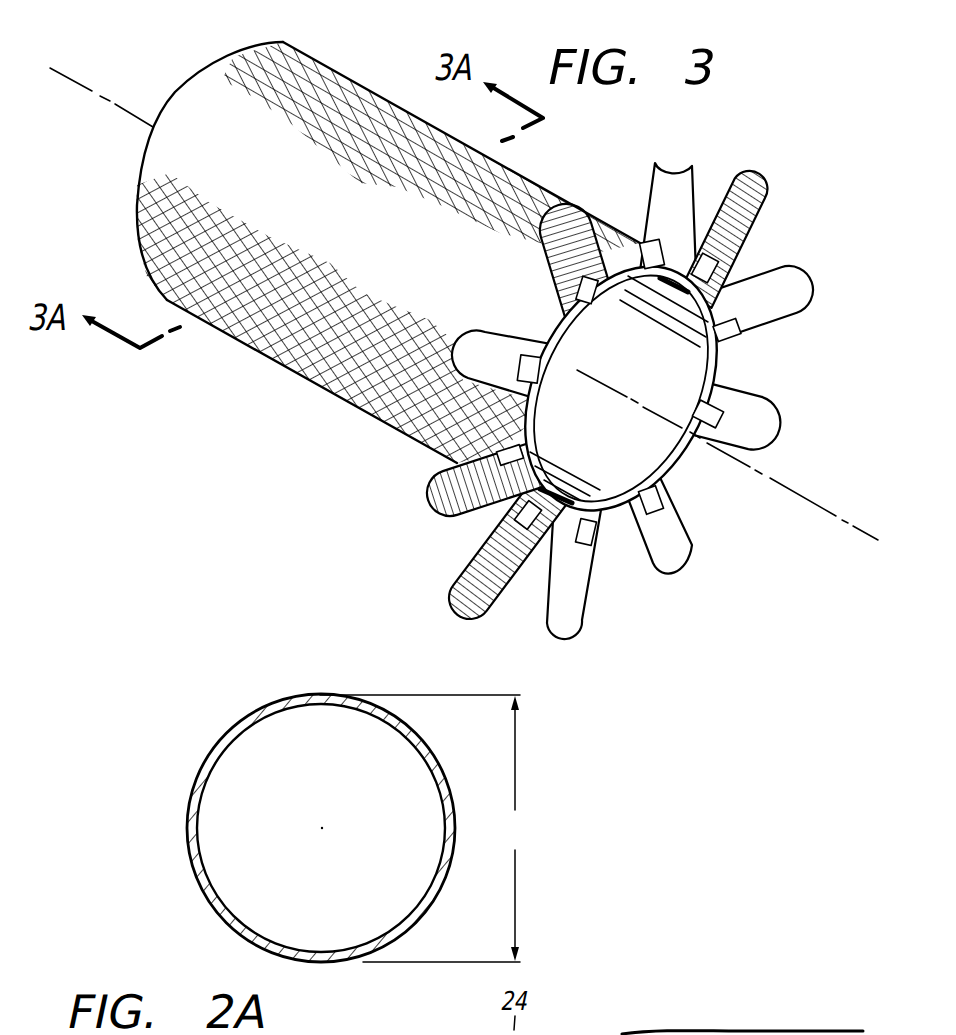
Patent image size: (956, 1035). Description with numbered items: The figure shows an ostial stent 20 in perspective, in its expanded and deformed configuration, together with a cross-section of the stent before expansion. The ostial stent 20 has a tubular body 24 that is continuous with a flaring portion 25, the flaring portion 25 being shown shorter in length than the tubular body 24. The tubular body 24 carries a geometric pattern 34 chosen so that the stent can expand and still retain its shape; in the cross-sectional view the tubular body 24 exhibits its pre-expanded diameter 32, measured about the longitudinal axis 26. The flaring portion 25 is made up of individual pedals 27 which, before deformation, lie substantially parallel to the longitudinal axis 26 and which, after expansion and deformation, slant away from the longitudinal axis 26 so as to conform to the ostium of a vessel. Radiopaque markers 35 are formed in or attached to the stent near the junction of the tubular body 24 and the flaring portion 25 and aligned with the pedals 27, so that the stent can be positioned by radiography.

In FIG. 3, the ostial stent 20 is at (356, 70).
In FIG. 3, the tubular body 24 is at (550, 185).
In FIG. 2A, the tubular body 24 is at (238, 713).
In FIG. 3, the flaring portion 25 is at (619, 594).
In FIG. 3, the longitudinal axis 26 is at (77, 80).
In FIG. 2A, the longitudinal axis 26 is at (322, 828).
In FIG. 3, the pedals 27 is at (760, 302).
In FIG. 2A, the pre-expanded diameter 32 is at (428, 828).
In FIG. 3, the geometric pattern 34 is at (328, 352).
In FIG. 3, the radiopaque markers 35 is at (705, 255).